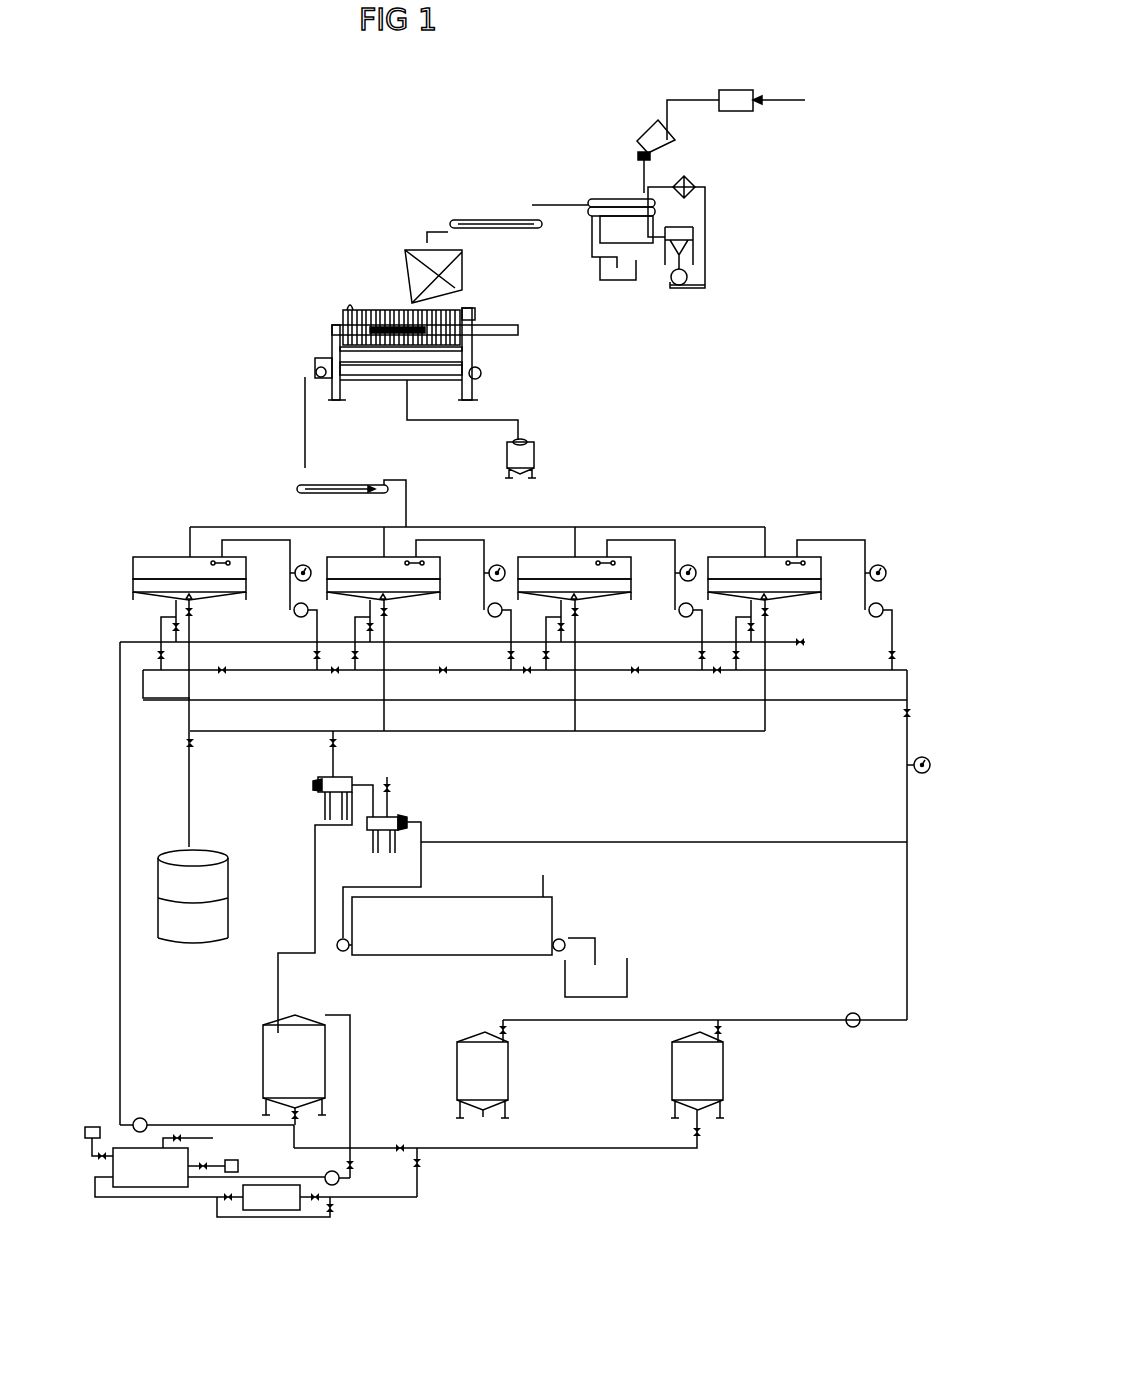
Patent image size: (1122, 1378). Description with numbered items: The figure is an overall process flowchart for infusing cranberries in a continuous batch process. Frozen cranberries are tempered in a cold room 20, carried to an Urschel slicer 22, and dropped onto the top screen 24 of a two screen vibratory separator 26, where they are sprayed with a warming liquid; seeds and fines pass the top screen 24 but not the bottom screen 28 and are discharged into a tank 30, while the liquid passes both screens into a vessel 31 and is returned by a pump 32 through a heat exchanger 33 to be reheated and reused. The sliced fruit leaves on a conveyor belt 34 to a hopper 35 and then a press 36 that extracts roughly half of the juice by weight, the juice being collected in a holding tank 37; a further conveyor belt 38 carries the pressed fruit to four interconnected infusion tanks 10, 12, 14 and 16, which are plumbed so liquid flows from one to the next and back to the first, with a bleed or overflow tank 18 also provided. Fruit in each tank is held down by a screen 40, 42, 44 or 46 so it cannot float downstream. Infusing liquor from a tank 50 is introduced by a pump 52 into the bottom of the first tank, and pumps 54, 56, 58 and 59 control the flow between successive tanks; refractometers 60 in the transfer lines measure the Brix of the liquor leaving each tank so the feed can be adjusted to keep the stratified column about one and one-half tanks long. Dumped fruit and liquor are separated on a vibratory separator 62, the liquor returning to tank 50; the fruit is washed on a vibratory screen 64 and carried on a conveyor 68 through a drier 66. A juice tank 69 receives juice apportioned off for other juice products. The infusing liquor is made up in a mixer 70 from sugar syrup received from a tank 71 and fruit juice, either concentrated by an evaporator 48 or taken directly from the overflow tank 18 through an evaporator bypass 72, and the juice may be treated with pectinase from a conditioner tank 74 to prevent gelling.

The first infusion tank 10 is at (249, 591).
The second infusion tank 12 is at (439, 590).
The third infusion tank 14 is at (630, 590).
The fourth infusion tank 16 is at (823, 590).
The overflow tank 18 is at (725, 1078).
The cold room 20 is at (740, 90).
The Urschel slicer 22 is at (672, 139).
The top screen 24 is at (607, 204).
The two screen vibratory separator 26 is at (656, 212).
The bottom screen 28 is at (622, 212).
The tank 30 is at (640, 278).
The vessel 31 is at (694, 240).
The pump 32 is at (672, 286).
The heat exchanger 33 is at (690, 179).
The conveyor belt 34 is at (480, 217).
The hopper 35 is at (415, 245).
The press 36 is at (363, 306).
The holding tank 37 is at (535, 451).
The further conveyor belt 38 is at (340, 483).
The screen 40 is at (178, 577).
The screen 42 is at (386, 580).
The screen 44 is at (575, 580).
The screen 46 is at (766, 580).
The evaporator 48 is at (330, 1198).
The infusion liquor tank 50 is at (263, 1046).
The pump 52 is at (145, 1118).
The pump 54 is at (295, 614).
The pump 56 is at (488, 614).
The pump 58 is at (678, 614).
The pump 59 is at (885, 606).
The refractometers 60 is at (307, 564).
The vibratory separator 62 is at (318, 783).
The vibratory screen 64 is at (398, 815).
The drier 66 is at (447, 958).
The conveyor 68 is at (565, 937).
The juice tank 69 is at (510, 1078).
The mixer 70 is at (150, 1187).
The tank 71 is at (97, 1125).
The evaporator bypass 72 is at (275, 1220).
The conditioner tank 74 is at (240, 1167).